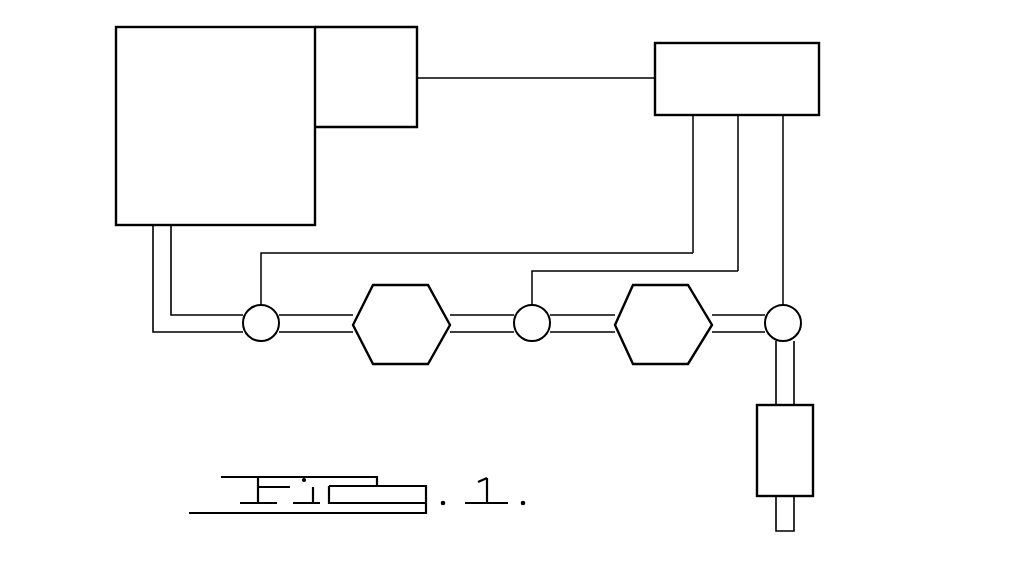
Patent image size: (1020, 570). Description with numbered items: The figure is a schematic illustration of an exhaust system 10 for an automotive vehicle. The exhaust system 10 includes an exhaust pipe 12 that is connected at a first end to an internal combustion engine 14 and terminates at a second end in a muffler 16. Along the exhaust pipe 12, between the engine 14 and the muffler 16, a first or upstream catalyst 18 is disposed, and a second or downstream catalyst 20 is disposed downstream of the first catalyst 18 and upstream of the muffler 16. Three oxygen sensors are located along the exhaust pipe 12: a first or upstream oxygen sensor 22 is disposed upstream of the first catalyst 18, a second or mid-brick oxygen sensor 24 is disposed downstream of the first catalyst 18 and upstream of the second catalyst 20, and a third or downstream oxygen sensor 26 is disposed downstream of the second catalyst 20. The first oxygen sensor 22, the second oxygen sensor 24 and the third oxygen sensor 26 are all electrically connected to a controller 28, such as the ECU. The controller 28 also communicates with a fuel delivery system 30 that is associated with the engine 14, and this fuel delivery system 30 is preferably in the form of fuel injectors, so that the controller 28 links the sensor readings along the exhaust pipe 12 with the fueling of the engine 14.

The exhaust system 10 is at (204, 412).
The exhaust pipe 12 is at (154, 306).
The internal combustion engine 14 is at (217, 176).
The muffler 16 is at (804, 438).
The first or upstream catalyst 18 is at (386, 338).
The second or downstream catalyst 20 is at (647, 338).
The first or upstream oxygen sensor 22 is at (259, 335).
The second or mid-brick oxygen sensor 24 is at (531, 335).
The third or downstream oxygen sensor 26 is at (797, 320).
The controller 28 is at (664, 102).
The fuel delivery system 30 is at (388, 120).